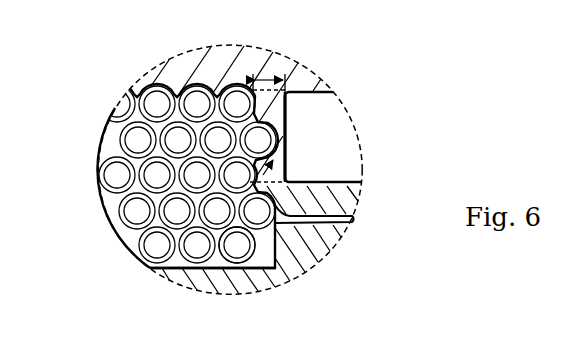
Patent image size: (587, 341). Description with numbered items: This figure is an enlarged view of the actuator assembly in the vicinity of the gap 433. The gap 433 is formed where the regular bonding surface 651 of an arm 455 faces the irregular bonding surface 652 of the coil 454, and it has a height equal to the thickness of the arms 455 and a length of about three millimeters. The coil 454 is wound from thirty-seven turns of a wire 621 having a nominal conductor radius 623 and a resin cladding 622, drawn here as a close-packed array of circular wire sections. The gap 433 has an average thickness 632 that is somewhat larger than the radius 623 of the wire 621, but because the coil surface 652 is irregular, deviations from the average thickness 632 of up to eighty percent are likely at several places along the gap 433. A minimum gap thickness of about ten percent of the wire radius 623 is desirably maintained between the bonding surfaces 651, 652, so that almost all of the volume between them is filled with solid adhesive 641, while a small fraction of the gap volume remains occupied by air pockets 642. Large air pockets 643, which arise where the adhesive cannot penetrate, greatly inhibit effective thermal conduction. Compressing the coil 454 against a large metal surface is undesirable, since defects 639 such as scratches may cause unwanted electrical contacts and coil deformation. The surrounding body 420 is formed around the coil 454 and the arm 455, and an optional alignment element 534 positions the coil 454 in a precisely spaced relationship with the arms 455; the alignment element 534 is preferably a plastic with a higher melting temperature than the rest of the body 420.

The body 420 is at (200, 64).
The alignment element 534 is at (326, 240).
The gap 433 is at (328, 97).
The solid adhesive 641 is at (287, 162).
The air pockets 642 is at (287, 143).
The regular bonding surface 651 is at (290, 107).
The irregular bonding surface 652 is at (265, 176).
The average thickness 632 is at (271, 73).
The arm 455 is at (352, 168).
The wire 621 is at (108, 172).
The resin cladding 622 is at (101, 122).
The radius 623 is at (123, 87).
The coil 454 is at (108, 230).
The large air pockets 643 is at (176, 264).
The defects 639 is at (229, 258).